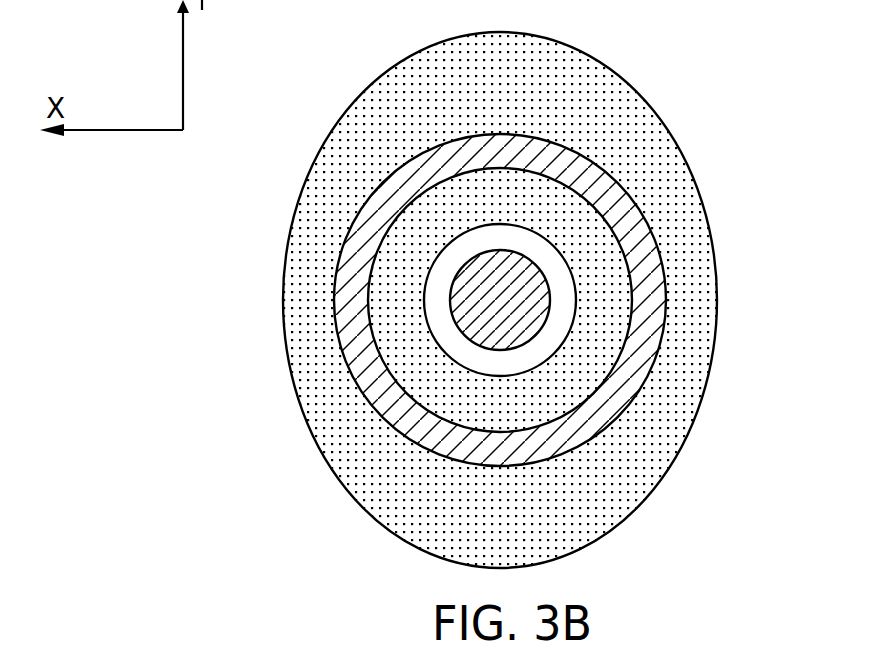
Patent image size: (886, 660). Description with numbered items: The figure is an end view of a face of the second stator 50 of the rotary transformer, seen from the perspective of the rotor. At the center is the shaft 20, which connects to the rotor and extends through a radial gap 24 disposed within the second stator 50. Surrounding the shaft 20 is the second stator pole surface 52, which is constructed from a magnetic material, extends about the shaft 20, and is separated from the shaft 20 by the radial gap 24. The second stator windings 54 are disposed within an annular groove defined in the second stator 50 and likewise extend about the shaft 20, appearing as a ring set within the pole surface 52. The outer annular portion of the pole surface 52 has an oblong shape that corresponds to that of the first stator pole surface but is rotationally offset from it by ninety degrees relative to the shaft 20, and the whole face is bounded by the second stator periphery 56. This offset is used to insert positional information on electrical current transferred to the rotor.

The shaft 20 is at (508, 258).
The radial gap 24 is at (448, 343).
The second stator 50 is at (718, 88).
The second stator pole surface 52 is at (582, 220).
The second stator windings 54 is at (517, 448).
The second stator periphery 56 is at (340, 487).